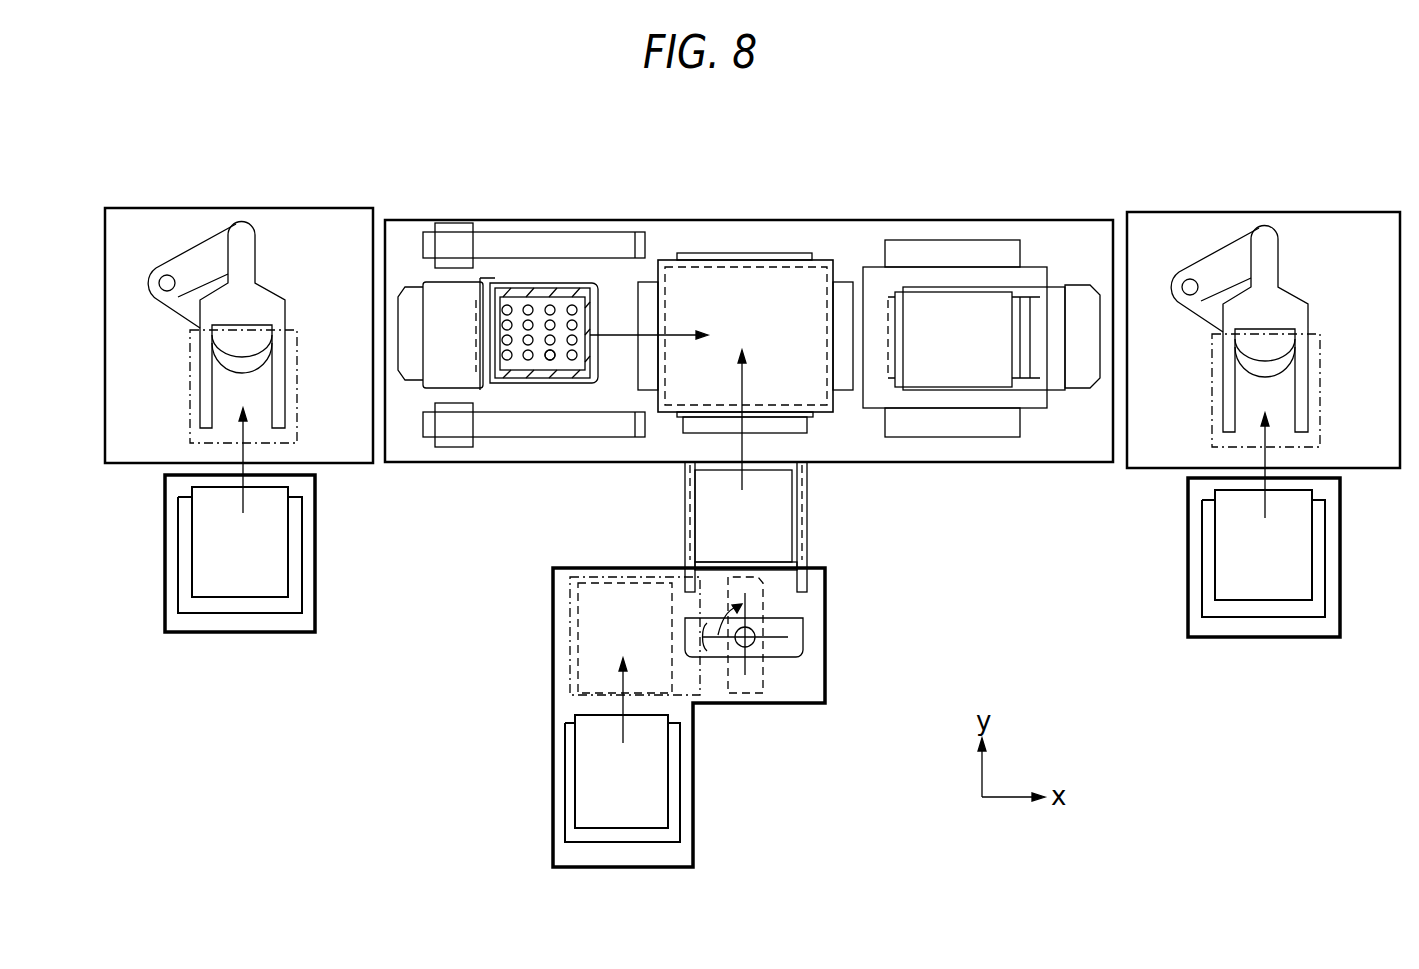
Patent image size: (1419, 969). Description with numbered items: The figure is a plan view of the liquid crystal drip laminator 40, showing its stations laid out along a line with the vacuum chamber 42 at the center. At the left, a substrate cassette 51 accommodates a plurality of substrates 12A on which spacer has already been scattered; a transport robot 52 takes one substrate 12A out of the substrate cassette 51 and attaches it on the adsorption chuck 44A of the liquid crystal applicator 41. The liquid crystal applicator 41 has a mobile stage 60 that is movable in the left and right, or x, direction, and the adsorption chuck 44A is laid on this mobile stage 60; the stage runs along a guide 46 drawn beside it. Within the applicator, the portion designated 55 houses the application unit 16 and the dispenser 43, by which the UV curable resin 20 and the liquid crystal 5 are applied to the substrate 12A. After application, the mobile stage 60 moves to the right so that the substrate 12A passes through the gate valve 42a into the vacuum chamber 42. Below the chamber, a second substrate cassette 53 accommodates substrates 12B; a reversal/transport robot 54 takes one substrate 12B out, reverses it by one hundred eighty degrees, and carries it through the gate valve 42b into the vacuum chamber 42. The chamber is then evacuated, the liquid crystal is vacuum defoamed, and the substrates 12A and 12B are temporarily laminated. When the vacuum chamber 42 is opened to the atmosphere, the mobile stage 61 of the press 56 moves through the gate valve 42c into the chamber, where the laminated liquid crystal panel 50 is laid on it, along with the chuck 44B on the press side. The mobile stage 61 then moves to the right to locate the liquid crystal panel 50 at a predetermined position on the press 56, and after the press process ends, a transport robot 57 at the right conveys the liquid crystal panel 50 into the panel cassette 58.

The liquid crystal 5 is at (550, 365).
The substrate 12A is at (297, 398).
The substrate 12B is at (780, 528).
The application unit 16 is at (432, 411).
The UV curable resin 20 is at (550, 293).
The liquid crystal drip laminator 40 is at (1023, 463).
The liquid crystal applicator 41 is at (513, 232).
The vacuum chamber 42 is at (742, 283).
The gate valve 42a is at (650, 280).
The gate valve 42b is at (680, 423).
The gate valve 42c is at (848, 277).
The dispenser 43 is at (432, 378).
The adsorption chuck 44A is at (603, 300).
The second transfer frame 44B is at (1022, 322).
The drive block 46 is at (455, 442).
The liquid crystal panel 50 is at (952, 295).
The substrate cassette 51 is at (302, 597).
The transport robot 52 is at (210, 252).
The substrate cassette 53 is at (668, 810).
The reversal/transport robot 54 is at (790, 608).
The application portion 55 is at (432, 411).
The press 56 is at (962, 403).
The transport robot 57 is at (1222, 262).
The panel cassette 58 is at (1325, 610).
The mobile stage 60 is at (432, 357).
The mobile stage 61 is at (1083, 382).